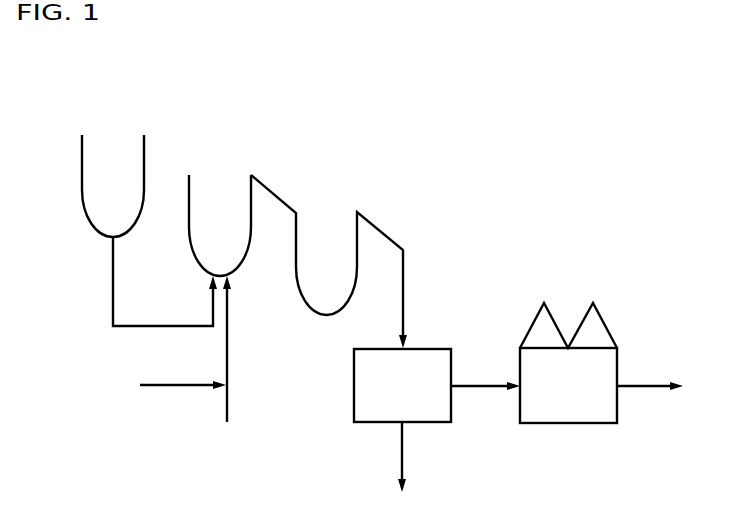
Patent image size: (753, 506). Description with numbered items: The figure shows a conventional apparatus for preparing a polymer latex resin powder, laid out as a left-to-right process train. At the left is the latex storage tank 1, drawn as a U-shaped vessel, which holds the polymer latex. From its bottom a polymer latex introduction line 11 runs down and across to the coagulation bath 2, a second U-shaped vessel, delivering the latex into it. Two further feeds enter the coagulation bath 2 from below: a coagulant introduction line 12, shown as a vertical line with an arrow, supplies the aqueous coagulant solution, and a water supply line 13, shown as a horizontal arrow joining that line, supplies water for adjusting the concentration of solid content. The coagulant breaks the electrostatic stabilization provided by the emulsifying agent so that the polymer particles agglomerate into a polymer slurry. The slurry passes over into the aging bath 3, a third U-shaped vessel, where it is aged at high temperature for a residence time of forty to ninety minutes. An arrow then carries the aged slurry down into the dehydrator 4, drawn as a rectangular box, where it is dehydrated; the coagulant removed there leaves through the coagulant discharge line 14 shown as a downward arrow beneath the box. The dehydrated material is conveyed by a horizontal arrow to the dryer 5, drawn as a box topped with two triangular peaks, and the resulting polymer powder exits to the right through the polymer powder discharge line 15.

The latex storage tank 1 is at (83, 155).
The coagulation bath 2 is at (190, 190).
The aging bath 3 is at (296, 231).
The dehydrator 4 is at (441, 348).
The dryer 5 is at (602, 321).
The polymer latex introduction line 11 is at (113, 288).
The coagulant introduction line 12 is at (227, 365).
The water supply line 13 is at (169, 386).
The coagulant discharge line 14 is at (402, 450).
The polymer powder discharge line 15 is at (646, 383).